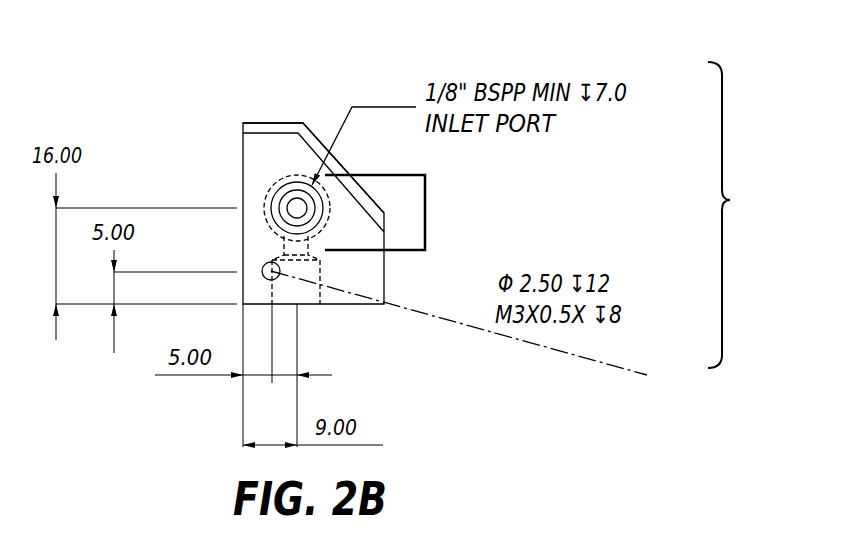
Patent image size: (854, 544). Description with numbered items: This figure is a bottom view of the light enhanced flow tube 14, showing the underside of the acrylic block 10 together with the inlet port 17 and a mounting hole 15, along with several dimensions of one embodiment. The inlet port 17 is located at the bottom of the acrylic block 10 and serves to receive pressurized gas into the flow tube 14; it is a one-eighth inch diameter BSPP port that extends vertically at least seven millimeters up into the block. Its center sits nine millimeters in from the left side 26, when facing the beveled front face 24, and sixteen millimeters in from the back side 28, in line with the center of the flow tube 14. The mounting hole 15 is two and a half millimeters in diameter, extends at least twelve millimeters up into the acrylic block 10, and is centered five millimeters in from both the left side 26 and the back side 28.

The acrylic block 10 is at (738, 215).
The light enhanced flow tube 14 is at (297, 203).
The mounting hole 15 is at (278, 278).
The inlet port 17 is at (425, 213).
The beveled front face 24 is at (282, 122).
The left side 26 is at (243, 176).
The back side 28 is at (352, 304).